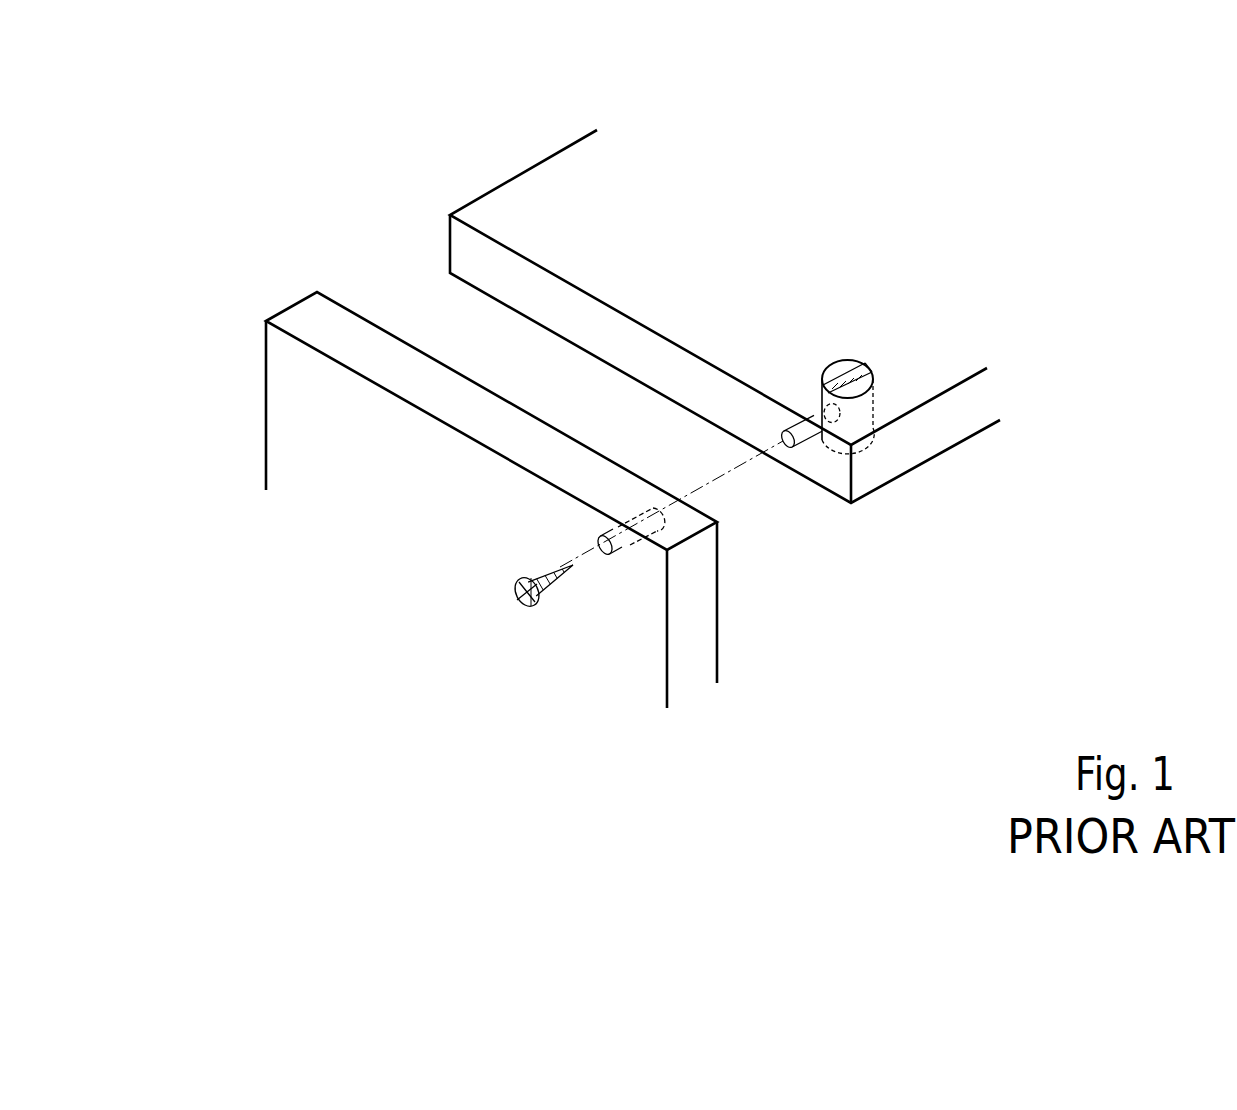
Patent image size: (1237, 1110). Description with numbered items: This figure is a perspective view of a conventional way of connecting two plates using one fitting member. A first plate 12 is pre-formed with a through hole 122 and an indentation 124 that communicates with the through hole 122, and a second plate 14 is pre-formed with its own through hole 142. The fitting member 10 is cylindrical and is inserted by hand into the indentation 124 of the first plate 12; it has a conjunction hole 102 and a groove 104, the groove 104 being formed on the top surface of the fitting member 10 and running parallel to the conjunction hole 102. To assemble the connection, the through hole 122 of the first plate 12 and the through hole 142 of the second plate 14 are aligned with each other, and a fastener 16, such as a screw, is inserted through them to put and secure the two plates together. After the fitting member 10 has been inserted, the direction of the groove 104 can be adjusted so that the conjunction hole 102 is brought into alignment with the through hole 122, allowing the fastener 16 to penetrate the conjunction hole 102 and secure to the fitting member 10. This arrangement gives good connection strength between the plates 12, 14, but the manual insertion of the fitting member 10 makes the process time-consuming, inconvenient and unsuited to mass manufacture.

The fitting member 10 is at (894, 425).
The first plate 12 is at (520, 168).
The second plate 14 is at (287, 303).
The fastener 16 is at (515, 588).
The conjunction hole 102 is at (824, 405).
The groove 104 is at (847, 370).
The through hole 122 is at (812, 440).
The indentation 124 is at (875, 426).
The through hole 142 is at (603, 556).